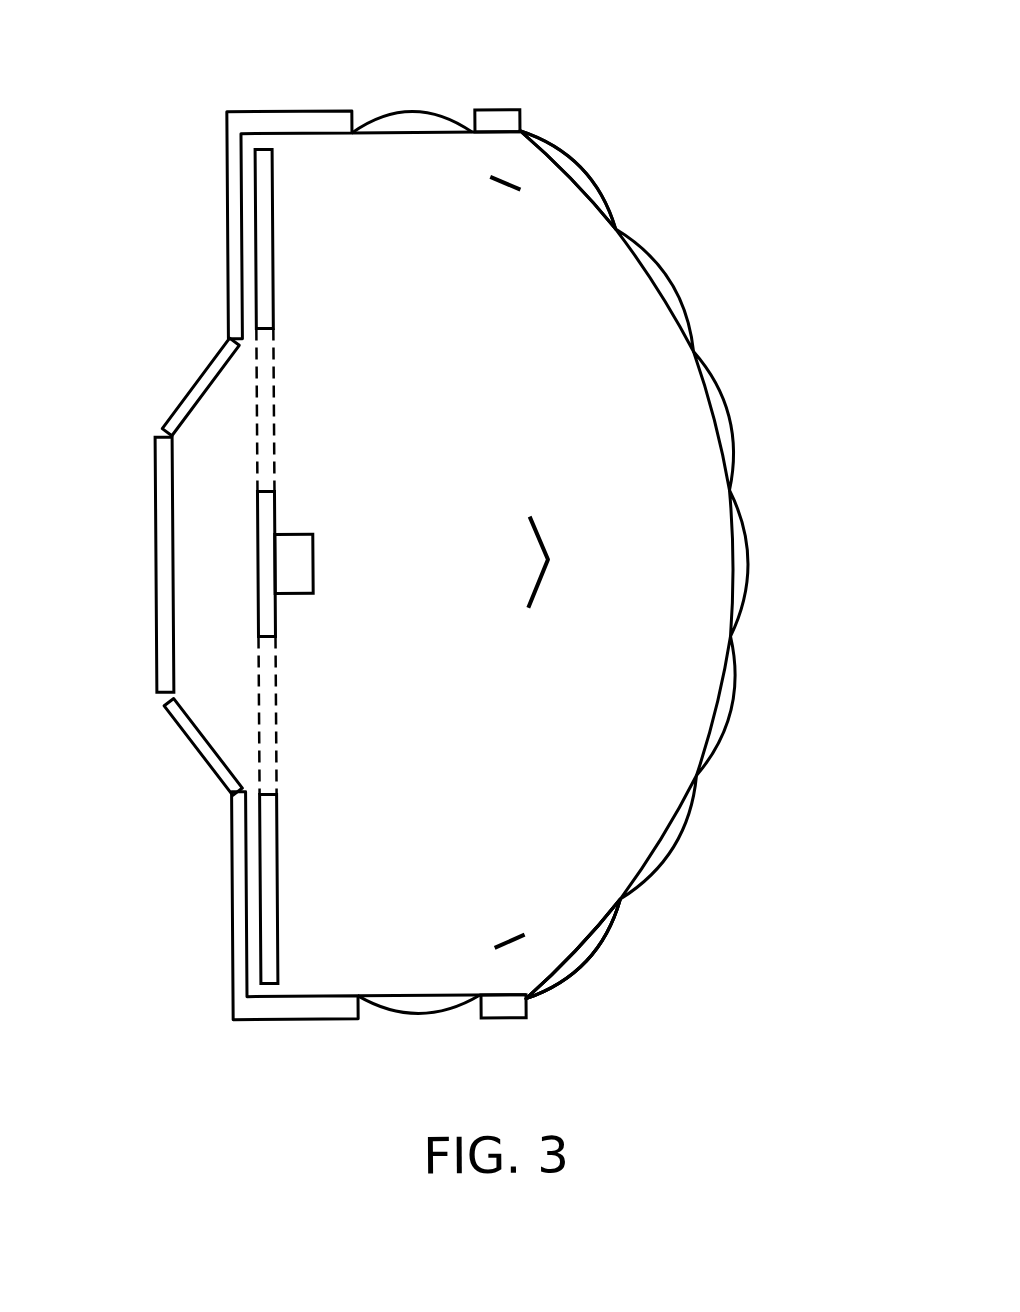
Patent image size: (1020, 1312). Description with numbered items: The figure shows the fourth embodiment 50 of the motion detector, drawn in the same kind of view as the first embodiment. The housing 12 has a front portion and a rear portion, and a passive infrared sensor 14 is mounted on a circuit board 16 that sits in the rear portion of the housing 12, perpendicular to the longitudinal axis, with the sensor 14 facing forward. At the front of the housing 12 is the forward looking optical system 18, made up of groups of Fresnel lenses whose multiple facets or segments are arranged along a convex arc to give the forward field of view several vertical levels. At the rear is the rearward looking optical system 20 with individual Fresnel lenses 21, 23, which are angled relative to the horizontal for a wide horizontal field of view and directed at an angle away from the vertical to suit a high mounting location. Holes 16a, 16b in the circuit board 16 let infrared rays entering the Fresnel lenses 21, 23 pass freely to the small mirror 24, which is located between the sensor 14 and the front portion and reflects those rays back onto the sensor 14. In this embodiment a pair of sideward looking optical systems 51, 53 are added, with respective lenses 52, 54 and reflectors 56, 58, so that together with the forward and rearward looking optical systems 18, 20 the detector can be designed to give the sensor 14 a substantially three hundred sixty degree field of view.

The housing 12 is at (250, 1022).
The passive infrared sensor 14 is at (296, 542).
The circuit board 16 is at (273, 267).
The hole in circuit board 16a is at (274, 444).
The hole in circuit board 16b is at (270, 688).
The forward looking optical system 18 is at (773, 315).
The rearward looking optical system 20 is at (162, 363).
The Fresnel lens 21 is at (180, 388).
The Fresnel lens 23 is at (187, 740).
The mirror 24 is at (545, 540).
The fourth embodiment 50 is at (620, 1022).
The sideward looking optical system 51 is at (458, 98).
The lens 52 is at (442, 110).
The sideward looking optical system 53 is at (517, 177).
The lens 54 is at (427, 1020).
The reflector 56 is at (504, 928).
The reflector 58 is at (503, 193).